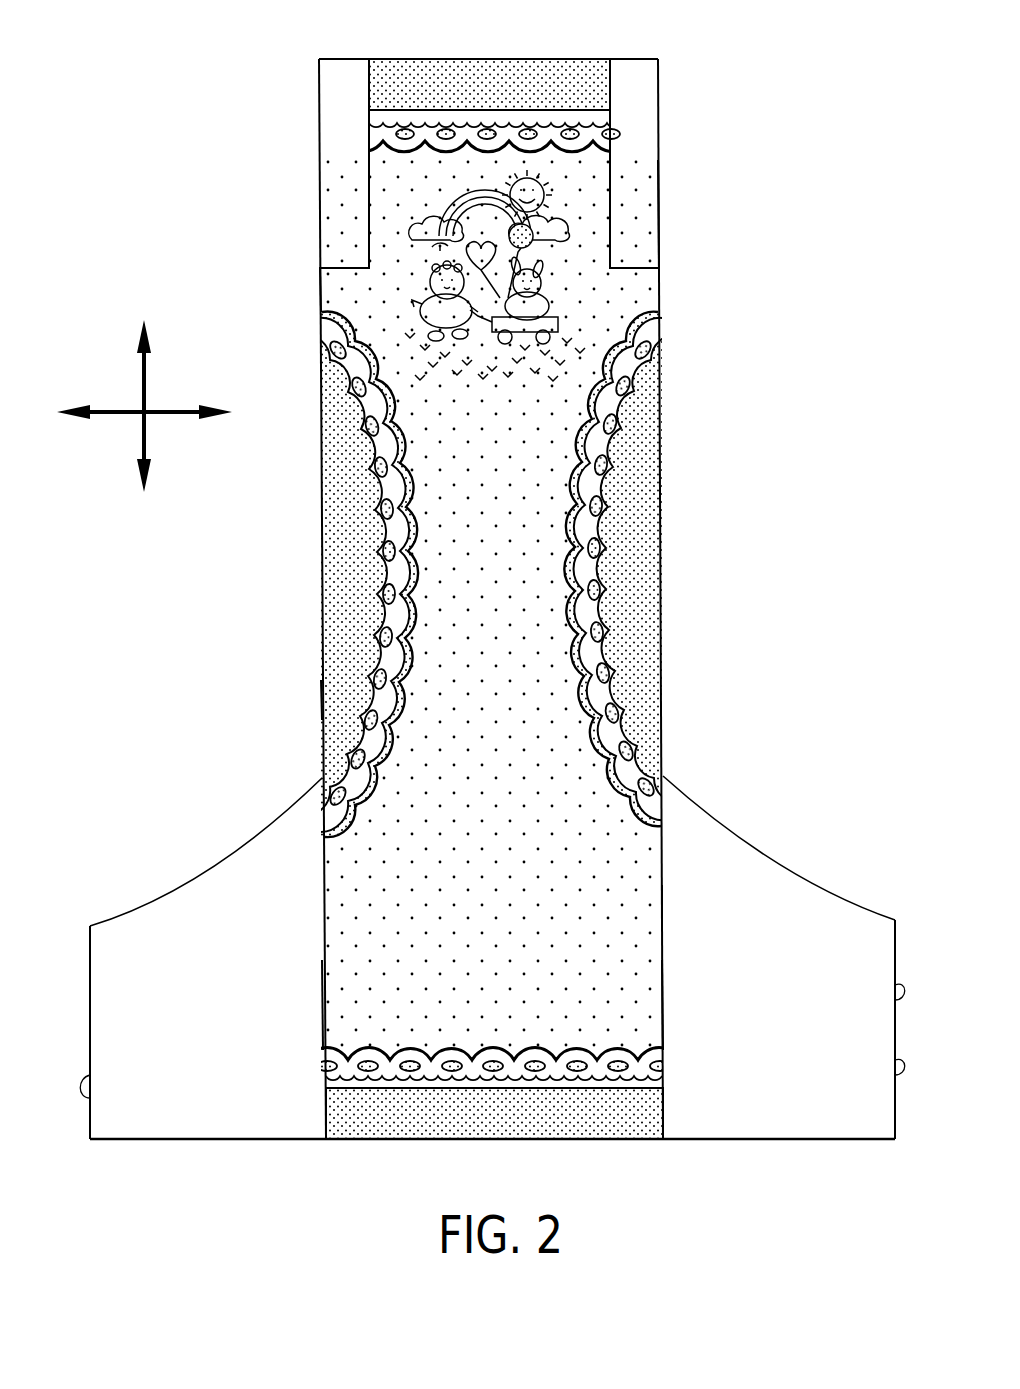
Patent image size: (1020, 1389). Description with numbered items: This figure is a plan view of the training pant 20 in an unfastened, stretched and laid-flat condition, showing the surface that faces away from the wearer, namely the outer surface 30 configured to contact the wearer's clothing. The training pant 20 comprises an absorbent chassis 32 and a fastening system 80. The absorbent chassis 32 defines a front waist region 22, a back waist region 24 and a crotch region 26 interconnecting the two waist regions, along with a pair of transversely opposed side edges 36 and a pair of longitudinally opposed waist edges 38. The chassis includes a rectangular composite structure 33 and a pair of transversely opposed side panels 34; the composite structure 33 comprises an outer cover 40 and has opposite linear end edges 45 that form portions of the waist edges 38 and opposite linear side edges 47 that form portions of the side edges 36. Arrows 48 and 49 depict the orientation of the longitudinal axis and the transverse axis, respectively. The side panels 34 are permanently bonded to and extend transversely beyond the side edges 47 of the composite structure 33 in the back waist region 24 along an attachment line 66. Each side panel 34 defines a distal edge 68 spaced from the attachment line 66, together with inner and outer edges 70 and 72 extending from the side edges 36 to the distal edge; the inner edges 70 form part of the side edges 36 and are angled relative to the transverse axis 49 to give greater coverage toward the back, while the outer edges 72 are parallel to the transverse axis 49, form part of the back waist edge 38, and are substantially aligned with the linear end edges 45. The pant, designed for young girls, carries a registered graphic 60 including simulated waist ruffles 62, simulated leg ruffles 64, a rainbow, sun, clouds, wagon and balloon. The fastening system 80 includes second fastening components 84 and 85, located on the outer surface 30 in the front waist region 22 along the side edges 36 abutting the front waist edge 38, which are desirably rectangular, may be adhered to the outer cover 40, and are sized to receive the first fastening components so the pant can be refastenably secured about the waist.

The training pant 20 is at (229, 151).
The front waist region 22 is at (706, 151).
The back waist region 24 is at (354, 930).
The crotch region 26 is at (567, 479).
The outer surface 30 is at (648, 573).
The absorbent chassis 32 is at (602, 754).
The composite structure 33 is at (320, 372).
The side panels 34 is at (169, 1008).
The side edges 36 is at (320, 440).
The waist edges 38 is at (447, 59).
The outer cover 40 is at (321, 298).
The linear end edges 45 is at (579, 59).
The linear side edges 47 is at (322, 702).
The longitudinal axis arrow 48 is at (146, 376).
The transverse axis arrow 49 is at (172, 410).
The registered graphic 60 is at (616, 299).
The simulated waist ruffles 62 is at (399, 95).
The simulated leg ruffles 64 is at (383, 558).
The attachment line 66 is at (322, 985).
The distal edge 68 is at (91, 1095).
The inner edges 70 is at (167, 880).
The outer edges 72 is at (790, 1140).
The fastening system 80 is at (690, 214).
The second fastening component 84 is at (319, 86).
The second fastening component 85 is at (643, 80).